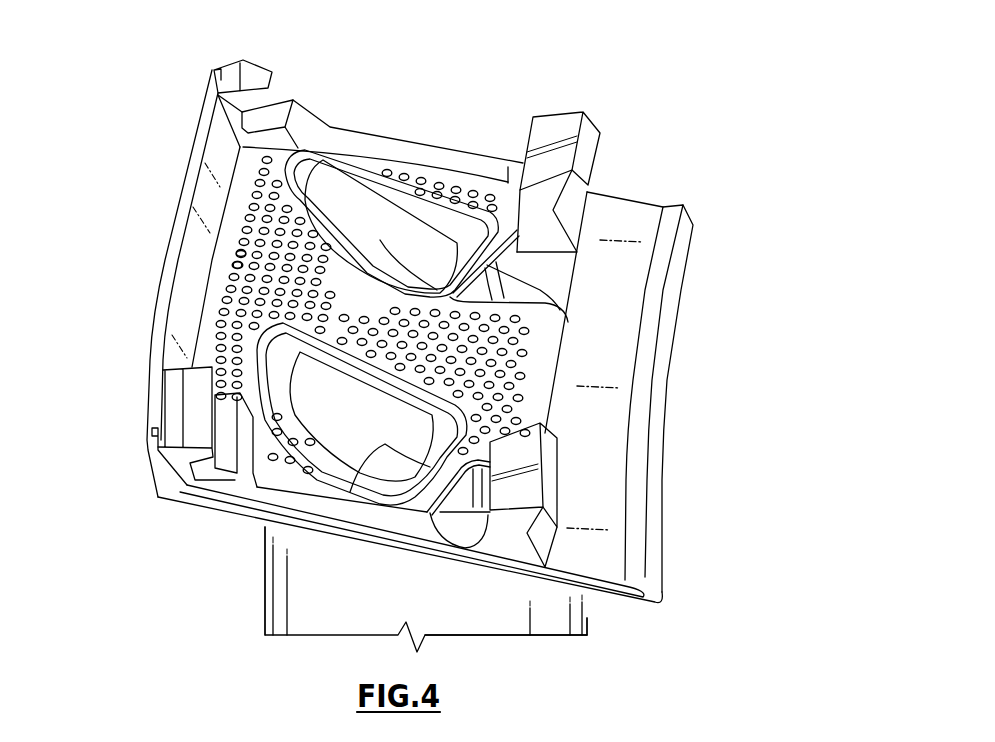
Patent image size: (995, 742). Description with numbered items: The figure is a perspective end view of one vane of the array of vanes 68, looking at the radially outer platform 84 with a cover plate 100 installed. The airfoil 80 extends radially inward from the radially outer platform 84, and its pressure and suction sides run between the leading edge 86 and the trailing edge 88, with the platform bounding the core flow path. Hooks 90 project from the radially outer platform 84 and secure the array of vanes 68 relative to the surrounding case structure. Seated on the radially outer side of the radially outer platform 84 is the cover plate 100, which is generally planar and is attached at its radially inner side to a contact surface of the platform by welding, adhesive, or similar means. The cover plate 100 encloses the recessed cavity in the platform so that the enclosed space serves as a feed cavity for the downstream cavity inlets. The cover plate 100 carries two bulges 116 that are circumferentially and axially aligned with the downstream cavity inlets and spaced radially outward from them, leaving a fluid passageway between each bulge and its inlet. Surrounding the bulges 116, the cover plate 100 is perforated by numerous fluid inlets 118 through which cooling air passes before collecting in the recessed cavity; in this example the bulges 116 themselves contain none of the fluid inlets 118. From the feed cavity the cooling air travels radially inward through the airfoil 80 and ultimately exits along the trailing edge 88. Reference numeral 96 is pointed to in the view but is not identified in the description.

The array of vanes 68 is at (664, 151).
The airfoil 80 is at (540, 637).
The radially outer platform 84 is at (163, 500).
The leading edge 86 is at (588, 620).
The trailing edge 88 is at (262, 585).
The hooks 90 is at (272, 70).
The reinforcing ribs 96 is at (546, 285).
The cover plate 100 is at (416, 176).
The bulges 116 is at (359, 184).
The fluid inlets 118 is at (233, 265).